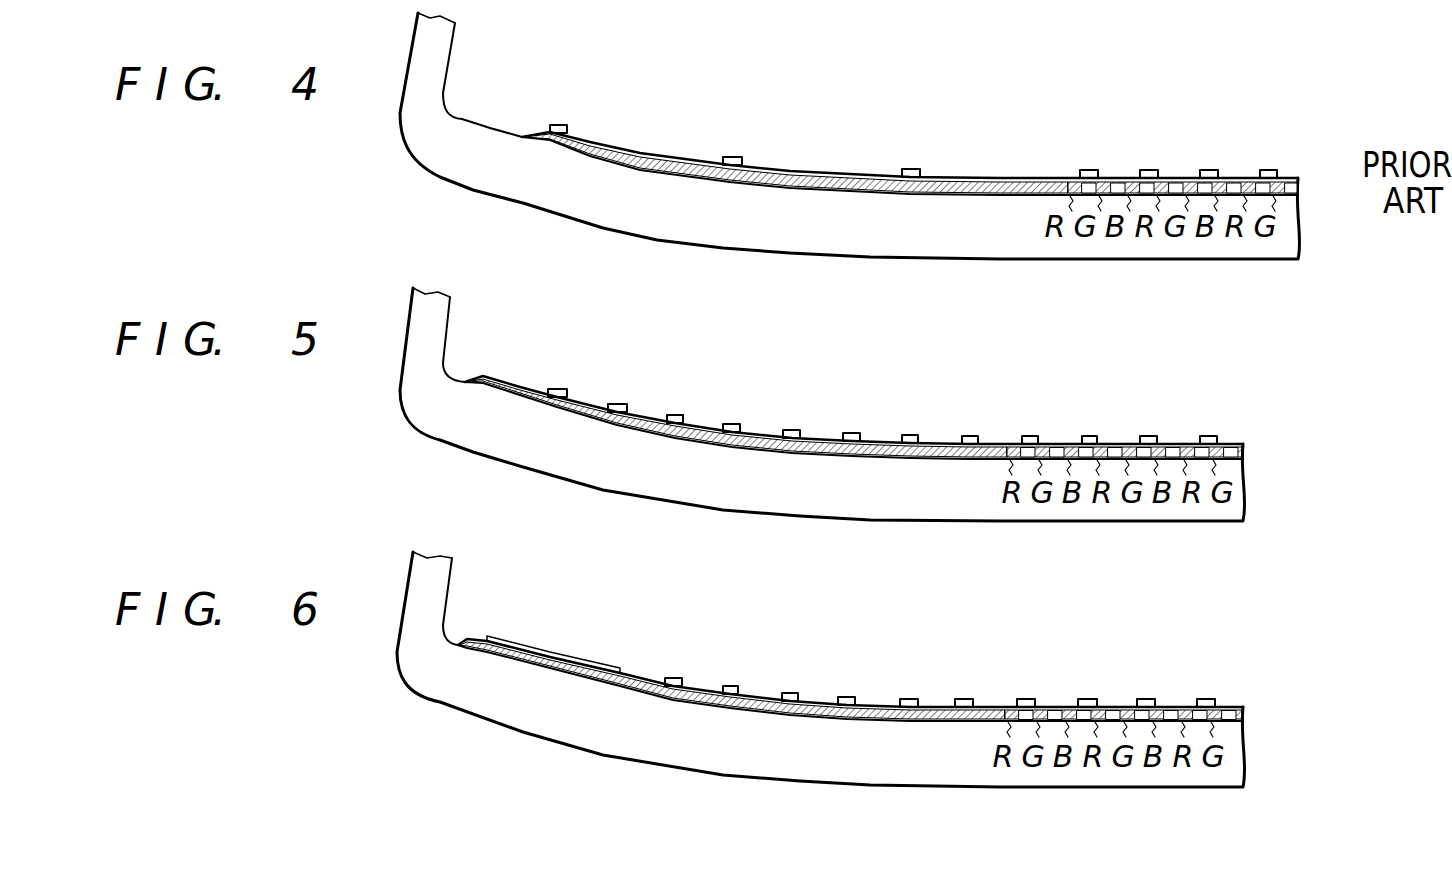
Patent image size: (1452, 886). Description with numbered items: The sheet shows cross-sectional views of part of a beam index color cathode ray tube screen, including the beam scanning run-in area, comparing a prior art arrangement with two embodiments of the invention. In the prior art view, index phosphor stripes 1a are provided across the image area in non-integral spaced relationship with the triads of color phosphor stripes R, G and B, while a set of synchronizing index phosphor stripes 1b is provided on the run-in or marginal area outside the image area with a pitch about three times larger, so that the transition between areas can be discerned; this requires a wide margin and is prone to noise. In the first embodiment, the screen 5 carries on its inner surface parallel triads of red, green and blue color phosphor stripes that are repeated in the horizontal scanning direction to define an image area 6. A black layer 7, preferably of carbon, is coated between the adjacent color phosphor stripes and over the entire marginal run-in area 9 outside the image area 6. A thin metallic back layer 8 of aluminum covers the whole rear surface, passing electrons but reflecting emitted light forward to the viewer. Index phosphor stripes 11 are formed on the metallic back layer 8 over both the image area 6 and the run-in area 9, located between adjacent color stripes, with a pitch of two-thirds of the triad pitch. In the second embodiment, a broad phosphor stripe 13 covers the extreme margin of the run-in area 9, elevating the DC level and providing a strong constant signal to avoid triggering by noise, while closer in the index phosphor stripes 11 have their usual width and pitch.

In FIG. 4, the index phosphor stripes 1a is at (1088, 170).
In FIG. 4, the synchronizing index phosphor stripes 1b is at (562, 125).
In FIG. 5, the screen 5 is at (470, 445).
In FIG. 6, the screen 5 is at (437, 697).
In FIG. 5, the image area 6 is at (1128, 408).
In FIG. 6, the image area 6 is at (1130, 674).
In FIG. 5, the black layer 7 is at (855, 404).
In FIG. 6, the black layer 7 is at (851, 660).
In FIG. 5, the metallic back layer 8 is at (940, 441).
In FIG. 6, the metallic back layer 8 is at (938, 707).
In FIG. 5, the run-in area 9 is at (893, 391).
In FIG. 6, the run-in area 9 is at (842, 651).
In FIG. 5, the index phosphor stripes 11 is at (850, 432).
In FIG. 6, the index phosphor stripes 11 is at (787, 694).
In FIG. 6, the broad phosphor stripe 13 is at (583, 662).